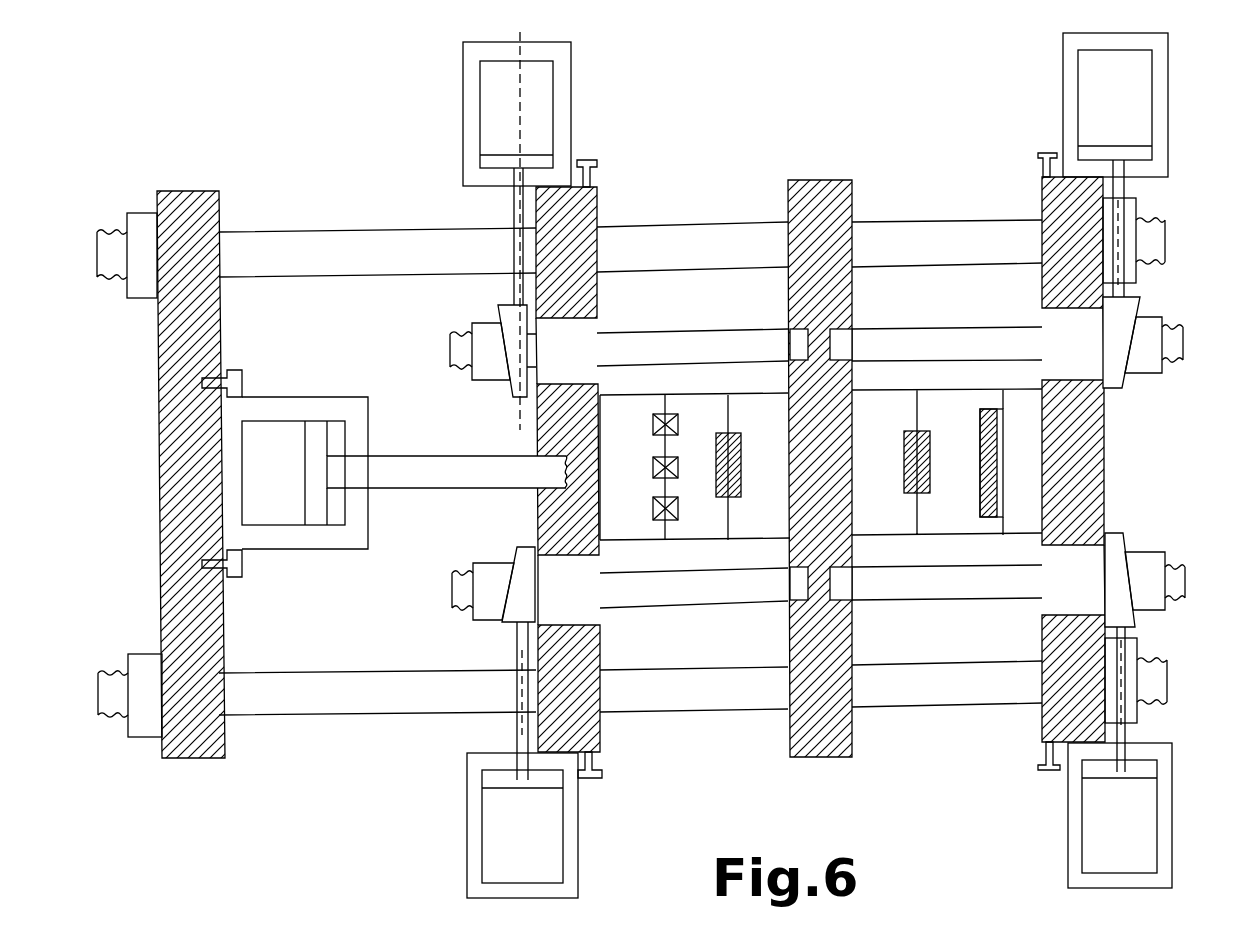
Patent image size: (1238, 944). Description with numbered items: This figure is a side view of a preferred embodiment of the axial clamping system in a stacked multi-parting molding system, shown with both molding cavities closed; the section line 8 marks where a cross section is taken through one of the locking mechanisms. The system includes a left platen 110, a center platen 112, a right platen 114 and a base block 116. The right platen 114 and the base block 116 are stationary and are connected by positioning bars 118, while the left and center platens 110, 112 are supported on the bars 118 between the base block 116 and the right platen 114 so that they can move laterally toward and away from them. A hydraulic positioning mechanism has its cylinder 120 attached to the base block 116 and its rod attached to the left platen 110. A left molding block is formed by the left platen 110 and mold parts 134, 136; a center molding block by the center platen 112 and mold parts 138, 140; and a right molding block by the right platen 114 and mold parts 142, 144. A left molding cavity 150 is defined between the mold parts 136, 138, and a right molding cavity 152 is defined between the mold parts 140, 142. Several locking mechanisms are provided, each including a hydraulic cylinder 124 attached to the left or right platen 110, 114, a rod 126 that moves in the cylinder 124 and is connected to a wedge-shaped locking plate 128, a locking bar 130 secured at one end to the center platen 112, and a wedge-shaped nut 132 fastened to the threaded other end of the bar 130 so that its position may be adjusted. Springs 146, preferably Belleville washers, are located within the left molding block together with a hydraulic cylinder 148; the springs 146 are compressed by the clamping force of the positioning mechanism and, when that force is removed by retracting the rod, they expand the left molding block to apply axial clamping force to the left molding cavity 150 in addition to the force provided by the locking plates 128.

The section line 8- 8 is at (512, 32).
The left platen 110 is at (597, 203).
The center platen 112 is at (815, 180).
The right platen 114 is at (1042, 193).
The base block 116 is at (190, 191).
The positioning bars 118 is at (405, 277).
The cylinder 120 is at (332, 550).
The hydraulic cylinder 124 is at (572, 95).
The rod 126 is at (513, 210).
The wedge-shaped locking plate 128 is at (498, 306).
The locking bar 130 is at (628, 333).
The wedge-shaped nut 132 is at (480, 380).
The mold part 134 is at (640, 540).
The mold part 136 is at (700, 540).
The mold part 138 is at (755, 540).
The mold part 140 is at (888, 535).
The mold part 142 is at (950, 535).
The mold part 144 is at (1013, 535).
The springs 146 is at (653, 470).
The hydraulic cylinder 148 is at (1000, 420).
The left molding cavity 150 is at (741, 455).
The right molding cavity 152 is at (955, 430).